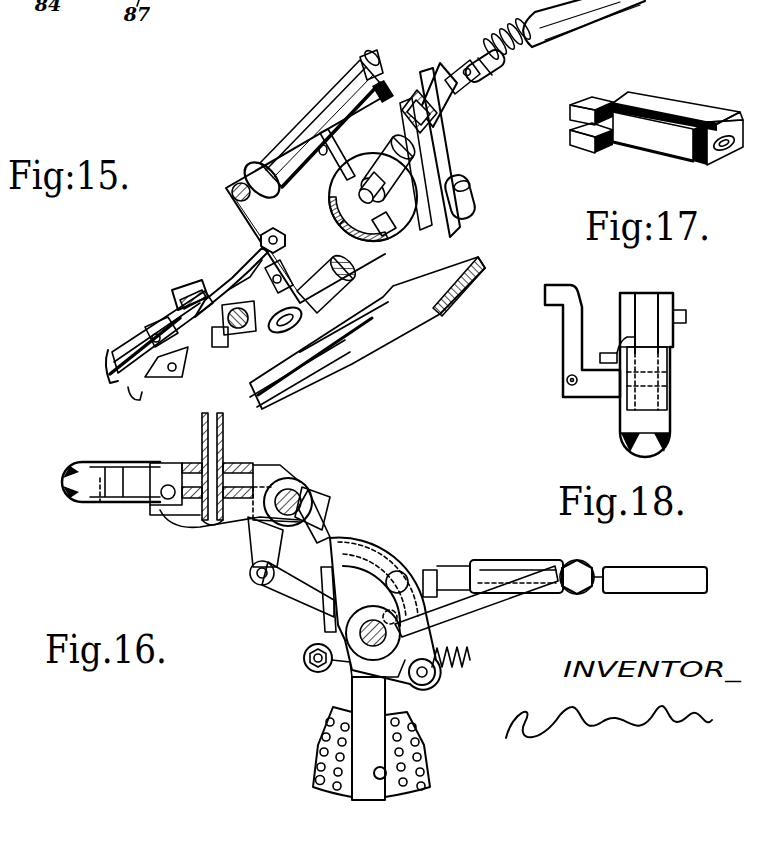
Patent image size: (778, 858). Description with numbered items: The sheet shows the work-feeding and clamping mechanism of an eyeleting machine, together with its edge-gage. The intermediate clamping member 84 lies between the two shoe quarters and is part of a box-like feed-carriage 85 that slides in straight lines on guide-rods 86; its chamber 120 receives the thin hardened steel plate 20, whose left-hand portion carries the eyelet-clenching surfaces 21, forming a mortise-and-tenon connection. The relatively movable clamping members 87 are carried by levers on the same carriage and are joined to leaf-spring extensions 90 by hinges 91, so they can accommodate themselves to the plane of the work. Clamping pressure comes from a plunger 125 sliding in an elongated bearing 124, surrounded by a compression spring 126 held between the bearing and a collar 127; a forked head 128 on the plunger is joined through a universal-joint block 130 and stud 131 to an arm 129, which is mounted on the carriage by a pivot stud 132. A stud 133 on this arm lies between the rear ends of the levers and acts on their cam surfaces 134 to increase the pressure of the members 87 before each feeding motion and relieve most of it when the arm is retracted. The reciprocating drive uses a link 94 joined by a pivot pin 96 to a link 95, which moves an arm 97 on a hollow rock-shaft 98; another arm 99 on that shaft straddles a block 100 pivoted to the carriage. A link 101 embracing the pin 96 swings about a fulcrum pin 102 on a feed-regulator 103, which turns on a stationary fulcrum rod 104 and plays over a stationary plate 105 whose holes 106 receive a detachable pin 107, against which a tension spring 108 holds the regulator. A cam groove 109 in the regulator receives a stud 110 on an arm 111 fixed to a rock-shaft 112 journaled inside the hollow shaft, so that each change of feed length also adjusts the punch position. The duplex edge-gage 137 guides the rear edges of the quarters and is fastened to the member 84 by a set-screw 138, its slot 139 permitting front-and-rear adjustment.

In FIG. 18, the thin hardened steel plate 20 is at (608, 388).
In FIG. 18, the duplex eyelet-clenching surfaces 21 is at (567, 384).
In FIG. 15, the intermediate clamping member 84 is at (110, 376).
In FIG. 18, the intermediate clamping member 84 is at (656, 442).
In FIG. 16, the intermediate clamping member 84 is at (82, 481).
In FIG. 15, the feed-carriage 85 is at (330, 128).
In FIG. 16, the feed-carriage 85 is at (240, 466).
In FIG. 15, the guide-rods 86 is at (232, 190).
In FIG. 15, the relatively movable clamping members 87 is at (110, 357).
In FIG. 15, the leaf-spring extensions 90 is at (230, 285).
In FIG. 18, the leaf-spring extensions 90 is at (652, 354).
In FIG. 15, the hinges 91 is at (172, 303).
In FIG. 18, the hinges 91 is at (660, 400).
In FIG. 16, the link 94 is at (507, 602).
In FIG. 16, the link 95 is at (305, 598).
In FIG. 16, the pivot pin 96 is at (437, 566).
In FIG. 16, the arm 97 is at (267, 545).
In FIG. 16, the hollow rock-shaft 98 is at (325, 492).
In FIG. 16, the arm 99 is at (262, 478).
In FIG. 16, the block 100 is at (188, 480).
In FIG. 16, the link 101 is at (433, 630).
In FIG. 16, the fulcrum pin 102 is at (432, 678).
In FIG. 16, the feed-regulator 103 is at (347, 690).
In FIG. 16, the stationary fulcrum rod 104 is at (410, 686).
In FIG. 16, the stationary plate 105 is at (320, 745).
In FIG. 16, the holes 106 is at (316, 779).
In FIG. 16, the detachable pin 107 is at (388, 770).
In FIG. 16, the tension spring 108 is at (468, 656).
In FIG. 16, the cam groove 109 is at (374, 552).
In FIG. 16, the stud 110 is at (400, 572).
In FIG. 16, the arm 111 is at (345, 530).
In FIG. 16, the rock-shaft 112 is at (302, 490).
In FIG. 15, the chamber 120 is at (148, 340).
In FIG. 16, the chamber 120 is at (103, 500).
In FIG. 15, the elongated bearing 124 is at (590, 26).
In FIG. 15, the plunger 125 is at (450, 83).
In FIG. 15, the compression spring 126 is at (518, 54).
In FIG. 15, the collar 127 is at (466, 46).
In FIG. 15, the forked head 128 is at (422, 66).
In FIG. 15, the arm 129 is at (440, 166).
In FIG. 15, the block 130 is at (422, 113).
In FIG. 15, the stud 131 is at (381, 88).
In FIG. 15, the pivot stud 132 is at (476, 203).
In FIG. 15, the stud 133 is at (334, 204).
In FIG. 15, the cam surfaces 134 is at (360, 188).
In FIG. 17, the duplex edge-gage 137 is at (600, 117).
In FIG. 18, the duplex edge-gage 137 is at (608, 353).
In FIG. 15, the set-screw 138 is at (238, 330).
In FIG. 18, the set-screw 138 is at (688, 316).
In FIG. 15, the slot 139 is at (222, 348).
In FIG. 17, the slot 139 is at (724, 149).